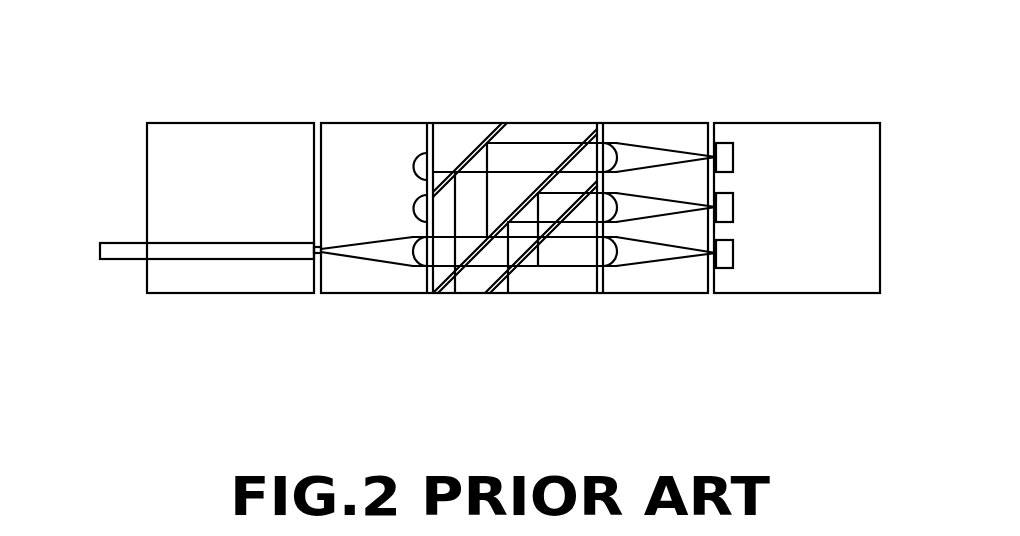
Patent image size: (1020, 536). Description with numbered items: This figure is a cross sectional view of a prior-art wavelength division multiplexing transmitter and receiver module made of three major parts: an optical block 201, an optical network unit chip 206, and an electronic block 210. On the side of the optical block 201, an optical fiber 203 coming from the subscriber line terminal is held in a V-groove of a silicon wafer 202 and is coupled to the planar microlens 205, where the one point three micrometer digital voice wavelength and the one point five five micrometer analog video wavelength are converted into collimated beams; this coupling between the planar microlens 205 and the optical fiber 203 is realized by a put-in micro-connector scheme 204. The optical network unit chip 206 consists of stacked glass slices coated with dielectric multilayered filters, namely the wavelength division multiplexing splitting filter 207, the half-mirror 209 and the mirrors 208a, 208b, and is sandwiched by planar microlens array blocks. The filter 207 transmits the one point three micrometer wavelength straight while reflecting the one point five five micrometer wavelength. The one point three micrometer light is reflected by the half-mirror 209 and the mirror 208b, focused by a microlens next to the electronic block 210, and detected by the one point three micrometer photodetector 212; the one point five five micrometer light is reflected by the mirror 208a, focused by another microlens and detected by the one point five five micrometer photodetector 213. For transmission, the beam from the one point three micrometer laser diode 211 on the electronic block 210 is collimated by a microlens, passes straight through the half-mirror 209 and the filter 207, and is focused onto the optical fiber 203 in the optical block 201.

The optical block 201 is at (270, 293).
The silicon wafer 202 is at (180, 163).
The optical fiber 203 is at (222, 252).
The put-in micro-connector scheme 204 is at (314, 244).
The planar microlens 205 is at (420, 208).
The optical network unit chip 206 is at (582, 124).
The wavelength division multiplexing splitting filter 207 is at (473, 252).
The mirror 208a is at (457, 152).
The mirror 208b is at (527, 172).
The half-mirror 209 is at (530, 260).
The electronic block 210 is at (813, 123).
The 1.3 μm laser diode 211 is at (723, 257).
The 1.3 μm photodetector 212 is at (723, 205).
The 1.55 μm photodetector 213 is at (723, 160).